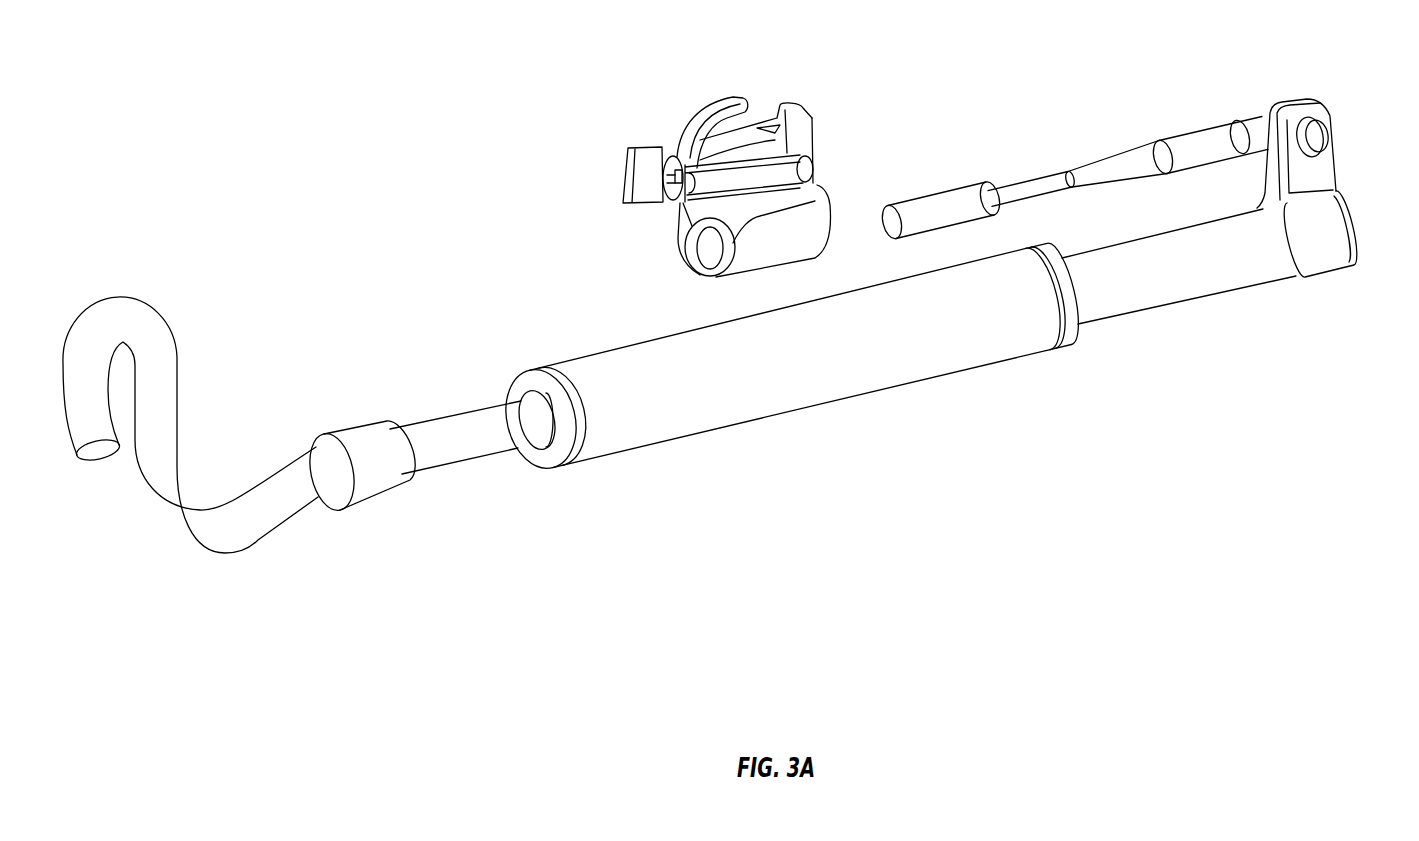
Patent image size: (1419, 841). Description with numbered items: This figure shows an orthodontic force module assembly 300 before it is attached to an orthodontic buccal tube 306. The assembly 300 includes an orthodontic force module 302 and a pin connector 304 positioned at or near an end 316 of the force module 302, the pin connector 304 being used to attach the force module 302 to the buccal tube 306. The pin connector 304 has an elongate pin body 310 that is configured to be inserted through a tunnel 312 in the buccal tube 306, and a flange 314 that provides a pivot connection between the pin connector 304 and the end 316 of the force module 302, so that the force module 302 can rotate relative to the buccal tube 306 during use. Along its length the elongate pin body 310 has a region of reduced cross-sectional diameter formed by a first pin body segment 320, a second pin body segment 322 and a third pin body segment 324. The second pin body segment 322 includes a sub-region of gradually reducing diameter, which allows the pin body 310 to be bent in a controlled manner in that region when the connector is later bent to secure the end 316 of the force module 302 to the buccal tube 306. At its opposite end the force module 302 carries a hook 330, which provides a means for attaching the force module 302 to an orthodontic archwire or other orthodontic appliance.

The orthodontic force module assembly 300 is at (493, 141).
The orthodontic force module 302 is at (888, 338).
The pin connector 304 is at (1265, 100).
The orthodontic buccal tube 306 is at (817, 218).
The elongate pin body 310 is at (1120, 172).
The tunnel 312 is at (708, 250).
The flange 314 is at (1317, 133).
The end 316 is at (1310, 177).
The first pin body segment 320 is at (1257, 100).
The second pin body segment 322 is at (1150, 128).
The third pin body segment 324 is at (983, 167).
The hook 330 is at (162, 447).